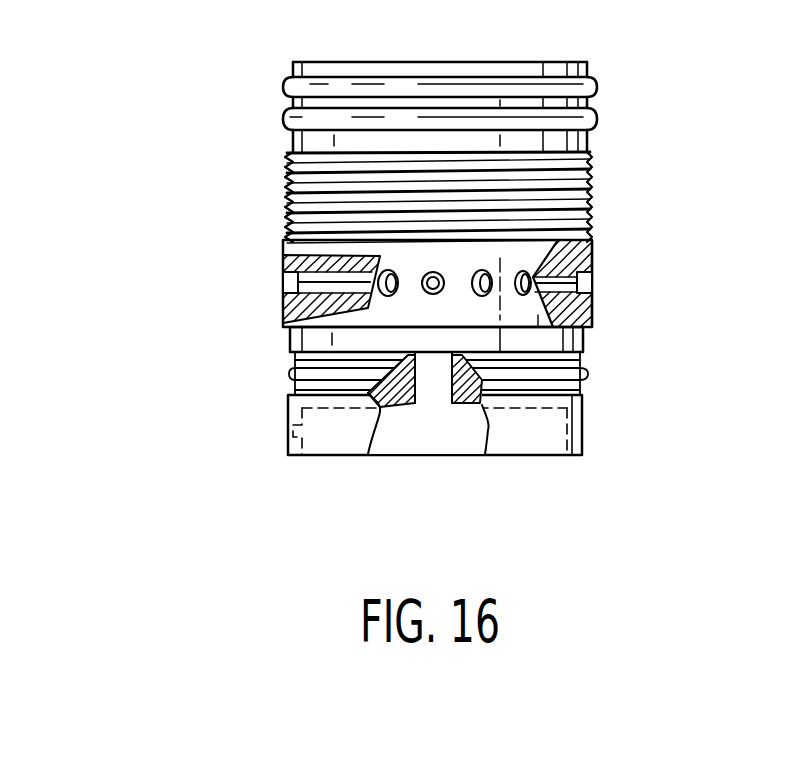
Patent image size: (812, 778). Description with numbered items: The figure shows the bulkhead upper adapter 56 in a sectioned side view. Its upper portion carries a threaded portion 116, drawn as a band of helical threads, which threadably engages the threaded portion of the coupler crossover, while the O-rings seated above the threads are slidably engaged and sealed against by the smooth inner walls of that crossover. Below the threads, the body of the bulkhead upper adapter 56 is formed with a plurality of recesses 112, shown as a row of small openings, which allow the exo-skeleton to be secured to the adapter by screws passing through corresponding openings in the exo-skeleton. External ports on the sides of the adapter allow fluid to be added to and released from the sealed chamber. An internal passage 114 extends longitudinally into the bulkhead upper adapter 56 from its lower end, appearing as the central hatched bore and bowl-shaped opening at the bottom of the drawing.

The threaded portion 116 is at (288, 186).
The bulkhead upper adapter 56 is at (297, 252).
The recesses 112 is at (493, 273).
The internal passage 114 is at (437, 393).